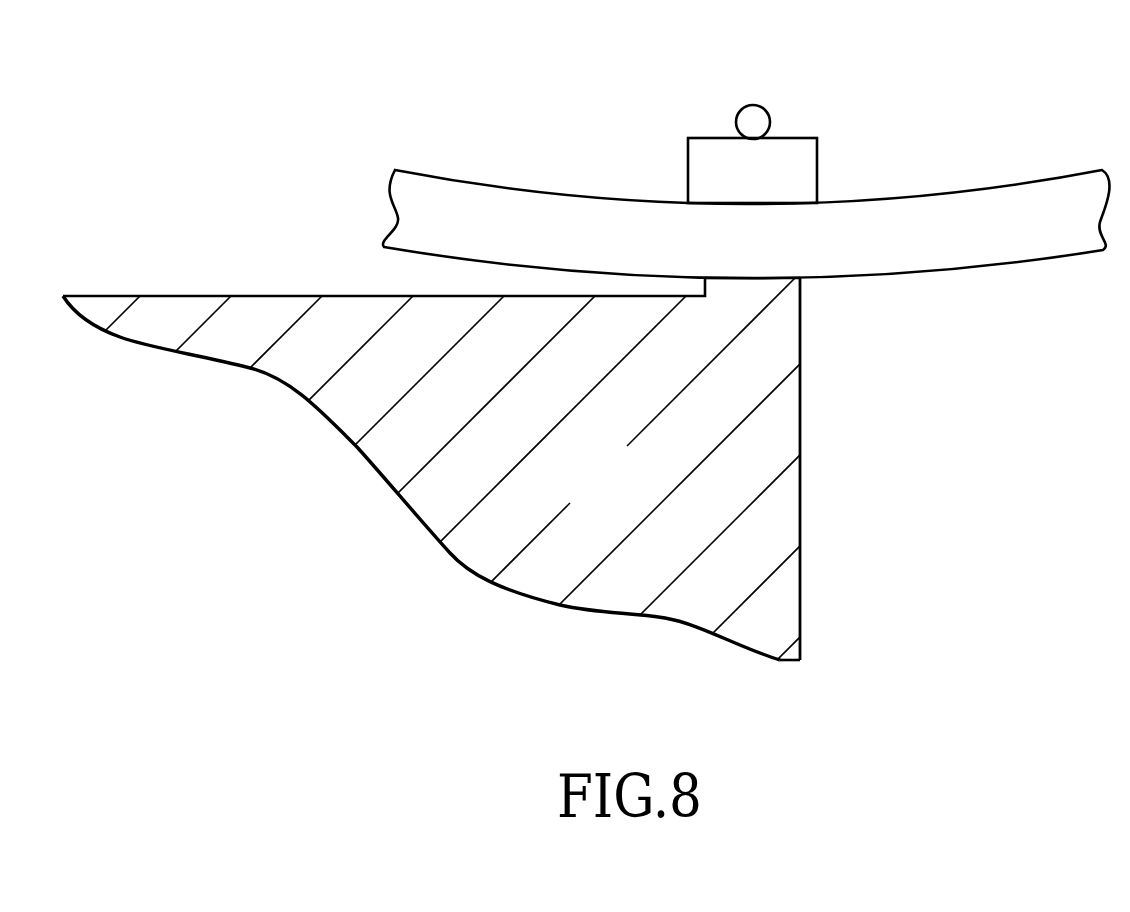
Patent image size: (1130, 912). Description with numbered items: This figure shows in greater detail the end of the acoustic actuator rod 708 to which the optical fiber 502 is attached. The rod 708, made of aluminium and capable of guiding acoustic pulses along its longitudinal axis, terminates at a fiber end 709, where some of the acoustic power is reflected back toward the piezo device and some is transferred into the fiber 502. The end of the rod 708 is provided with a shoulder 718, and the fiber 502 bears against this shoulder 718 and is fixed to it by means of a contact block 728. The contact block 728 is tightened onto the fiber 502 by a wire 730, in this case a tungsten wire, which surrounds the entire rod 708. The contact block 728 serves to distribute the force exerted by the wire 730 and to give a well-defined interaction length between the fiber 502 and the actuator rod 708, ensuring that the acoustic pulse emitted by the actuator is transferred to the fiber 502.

The fiber 502 is at (970, 248).
The rod 708 is at (630, 492).
The fiber end 709 is at (801, 460).
The shoulder 718 is at (782, 292).
The contact block 728 is at (782, 187).
The wire 730 is at (753, 105).